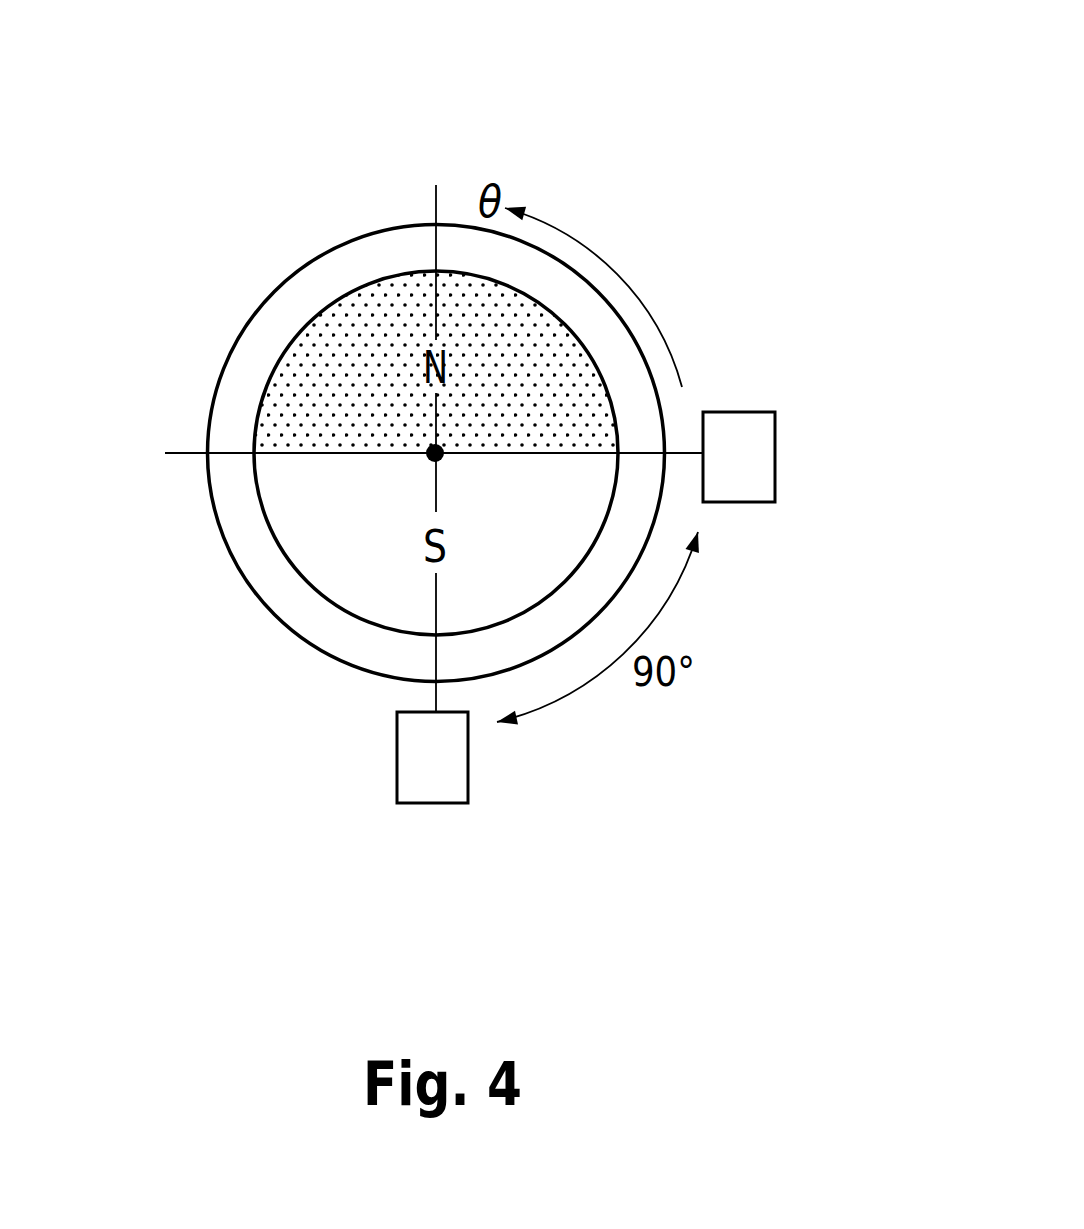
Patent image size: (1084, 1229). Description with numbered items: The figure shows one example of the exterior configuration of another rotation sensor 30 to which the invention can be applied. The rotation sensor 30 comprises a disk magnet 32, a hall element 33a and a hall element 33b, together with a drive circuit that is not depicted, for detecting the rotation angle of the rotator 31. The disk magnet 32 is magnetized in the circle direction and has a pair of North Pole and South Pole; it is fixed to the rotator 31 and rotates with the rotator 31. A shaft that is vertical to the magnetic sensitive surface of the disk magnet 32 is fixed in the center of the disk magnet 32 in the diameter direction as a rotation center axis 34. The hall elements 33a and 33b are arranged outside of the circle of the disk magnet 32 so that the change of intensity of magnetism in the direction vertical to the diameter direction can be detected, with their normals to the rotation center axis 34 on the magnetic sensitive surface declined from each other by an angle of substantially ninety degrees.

The rotation sensor 30 is at (672, 165).
The rotator 31 is at (360, 235).
The disk magnet 32 is at (293, 498).
The hall element 33a is at (775, 452).
The hall element 33b is at (432, 803).
The rotation center axis 34 is at (430, 457).